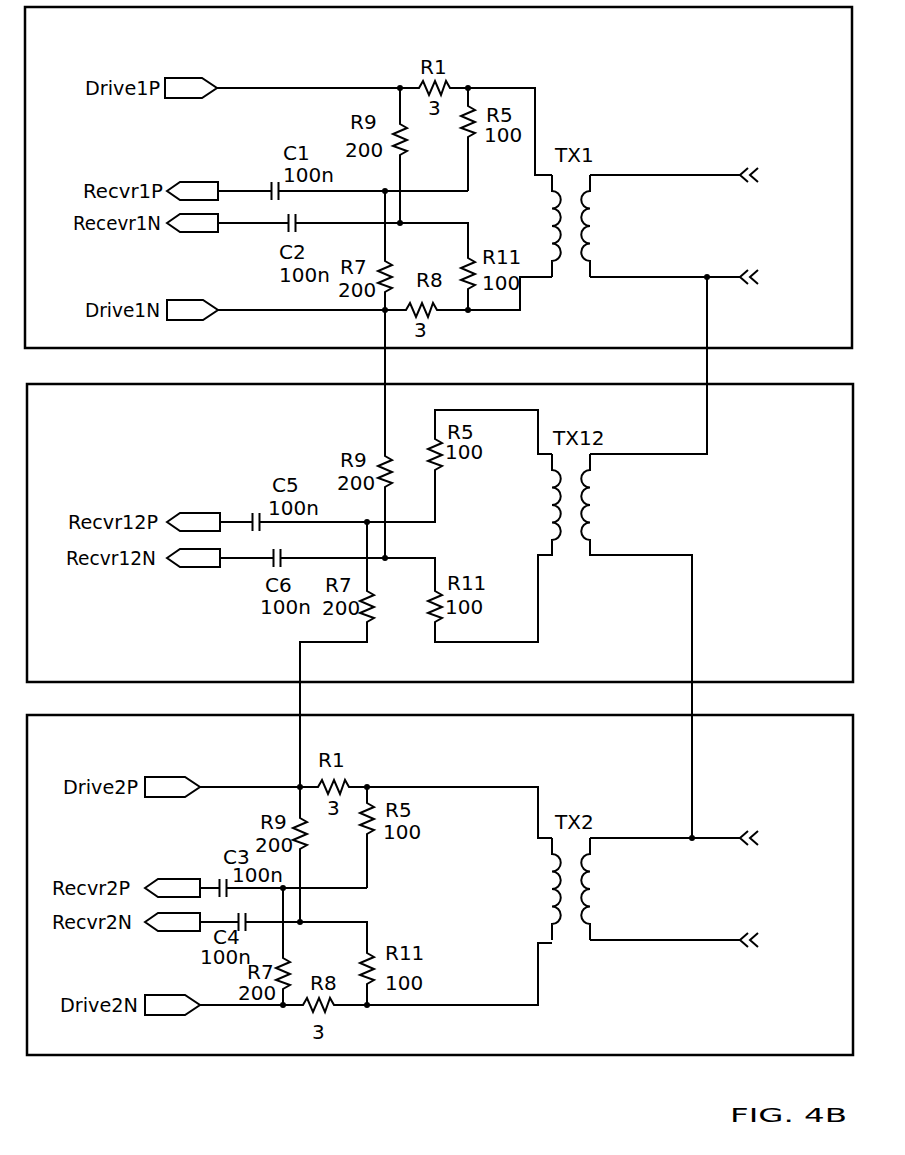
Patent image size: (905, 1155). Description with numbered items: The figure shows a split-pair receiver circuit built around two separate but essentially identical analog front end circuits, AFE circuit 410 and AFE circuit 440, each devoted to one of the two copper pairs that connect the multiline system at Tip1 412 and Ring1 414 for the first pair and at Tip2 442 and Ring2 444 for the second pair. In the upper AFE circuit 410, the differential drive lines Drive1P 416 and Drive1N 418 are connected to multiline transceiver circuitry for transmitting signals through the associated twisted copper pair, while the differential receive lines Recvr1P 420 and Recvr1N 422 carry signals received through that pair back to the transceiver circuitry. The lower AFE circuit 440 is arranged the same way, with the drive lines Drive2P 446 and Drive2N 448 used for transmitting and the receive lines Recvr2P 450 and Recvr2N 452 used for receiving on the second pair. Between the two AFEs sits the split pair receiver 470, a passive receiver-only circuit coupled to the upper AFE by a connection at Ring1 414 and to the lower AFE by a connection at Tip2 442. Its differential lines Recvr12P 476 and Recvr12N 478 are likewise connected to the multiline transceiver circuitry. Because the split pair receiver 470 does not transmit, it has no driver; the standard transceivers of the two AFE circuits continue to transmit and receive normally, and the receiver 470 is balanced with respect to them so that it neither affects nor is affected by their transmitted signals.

The AFE circuit 410 is at (78, 38).
The Tip1 412 is at (760, 159).
The Ring1 414 is at (752, 289).
The Drive1P 416 is at (183, 74).
The Drive1N 418 is at (185, 300).
The Recvr1P 420 is at (188, 183).
The Recvr1N 422 is at (203, 233).
The AFE circuit 440 is at (78, 749).
The Tip2 442 is at (760, 824).
The Ring2 444 is at (757, 955).
The Drive2P 446 is at (173, 773).
The Drive2N 448 is at (163, 995).
The Recvr2P 450 is at (163, 879).
The Recvr2N 452 is at (165, 936).
The split pair receiver 470 is at (78, 419).
The Recvr12P 476 is at (188, 513).
The Recvr12N 478 is at (192, 578).